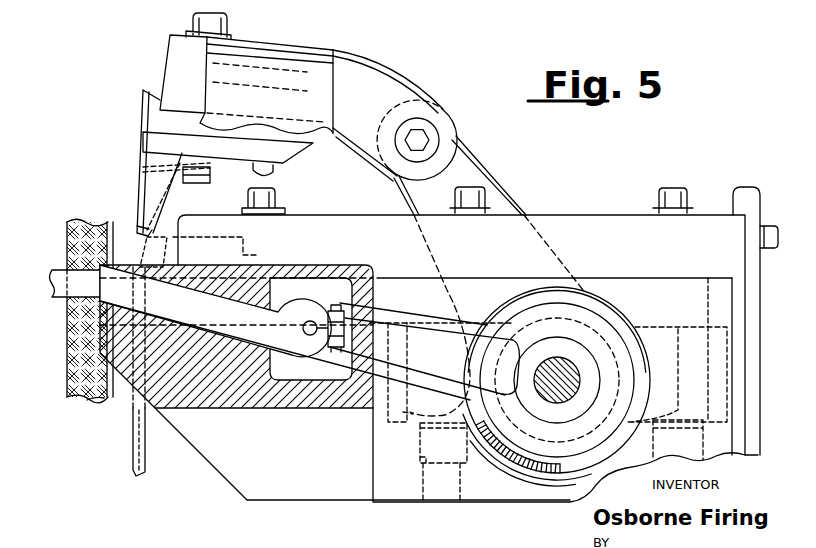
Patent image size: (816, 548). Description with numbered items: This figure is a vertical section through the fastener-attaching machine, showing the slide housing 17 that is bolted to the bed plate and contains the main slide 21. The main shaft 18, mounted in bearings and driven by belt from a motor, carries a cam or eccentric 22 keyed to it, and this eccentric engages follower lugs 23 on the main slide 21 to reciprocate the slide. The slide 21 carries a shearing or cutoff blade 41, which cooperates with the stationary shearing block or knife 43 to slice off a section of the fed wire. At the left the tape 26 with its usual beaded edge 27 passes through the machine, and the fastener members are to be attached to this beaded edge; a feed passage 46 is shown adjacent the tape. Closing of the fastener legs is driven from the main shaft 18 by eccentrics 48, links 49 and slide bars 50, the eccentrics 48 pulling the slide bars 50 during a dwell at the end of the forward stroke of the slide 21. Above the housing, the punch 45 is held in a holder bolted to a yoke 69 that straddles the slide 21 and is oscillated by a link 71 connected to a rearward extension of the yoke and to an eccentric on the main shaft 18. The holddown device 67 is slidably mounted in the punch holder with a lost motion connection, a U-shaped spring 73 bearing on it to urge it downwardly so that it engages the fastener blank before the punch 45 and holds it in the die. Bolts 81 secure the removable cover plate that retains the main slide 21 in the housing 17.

The slide housing 17 is at (214, 468).
The main shaft 18 is at (580, 368).
The main slide 21 is at (708, 292).
The cam or eccentric 22 is at (490, 440).
The follower lugs 23 is at (686, 335).
The tape 26 is at (70, 398).
The beaded edge 27 is at (106, 402).
The cutoff blade 41 is at (123, 382).
The stationary shearing block or knife 43 is at (250, 254).
The punch 45 is at (140, 212).
The pipe 46 is at (55, 300).
The eccentrics 48 is at (582, 346).
The links 49 is at (402, 308).
The slide bars 50 is at (292, 346).
The holddown device 67 is at (136, 226).
The yoke 69 is at (277, 46).
The link 71 is at (510, 196).
The U-shaped spring 73 is at (246, 170).
The bolts 81 is at (283, 200).